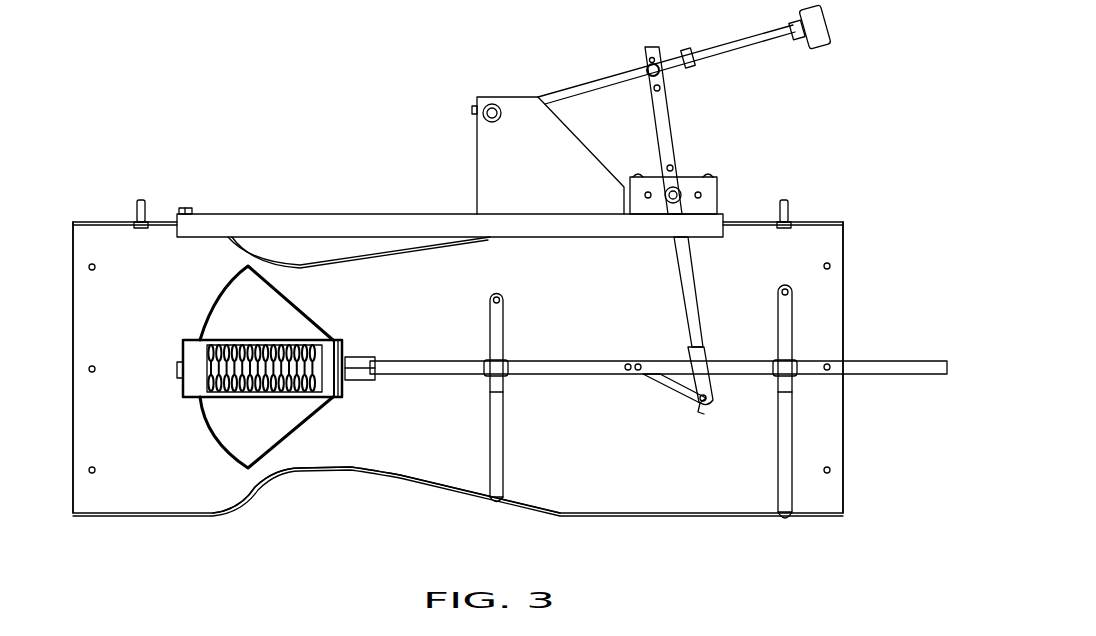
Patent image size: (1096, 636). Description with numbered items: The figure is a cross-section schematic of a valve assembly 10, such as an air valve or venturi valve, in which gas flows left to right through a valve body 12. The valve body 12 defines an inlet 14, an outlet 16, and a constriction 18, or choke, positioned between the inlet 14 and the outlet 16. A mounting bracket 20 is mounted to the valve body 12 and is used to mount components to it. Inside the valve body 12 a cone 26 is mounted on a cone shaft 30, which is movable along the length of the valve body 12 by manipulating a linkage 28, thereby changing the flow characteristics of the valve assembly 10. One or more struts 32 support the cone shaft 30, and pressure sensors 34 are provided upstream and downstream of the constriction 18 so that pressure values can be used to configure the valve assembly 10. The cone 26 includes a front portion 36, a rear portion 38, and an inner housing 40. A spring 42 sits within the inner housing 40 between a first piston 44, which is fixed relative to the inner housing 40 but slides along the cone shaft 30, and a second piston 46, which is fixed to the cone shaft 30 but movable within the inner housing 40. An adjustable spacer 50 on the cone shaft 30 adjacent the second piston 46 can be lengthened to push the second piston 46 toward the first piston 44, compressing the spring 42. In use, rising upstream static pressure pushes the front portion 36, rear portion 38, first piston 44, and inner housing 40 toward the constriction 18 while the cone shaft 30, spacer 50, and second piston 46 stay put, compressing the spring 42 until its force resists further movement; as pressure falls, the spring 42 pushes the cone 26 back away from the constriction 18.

The valve assembly 10 is at (224, 72).
The valve body 12 is at (698, 514).
The inlet 14 is at (66, 260).
The outlet 16 is at (862, 263).
The constriction 18 is at (328, 477).
The mounting bracket 20 is at (358, 215).
The cone 26 is at (165, 410).
The linkage 28 is at (682, 280).
The cone shaft 30 is at (443, 375).
The struts 32 is at (502, 478).
The pressure sensors 34 is at (138, 202).
The front portion 36 is at (222, 296).
The rear portion 38 is at (296, 300).
The inner housing 40 is at (268, 340).
The spring 42 is at (262, 398).
The first piston 44 is at (188, 352).
The second piston 46 is at (345, 350).
The adjustable spacer 50 is at (357, 381).